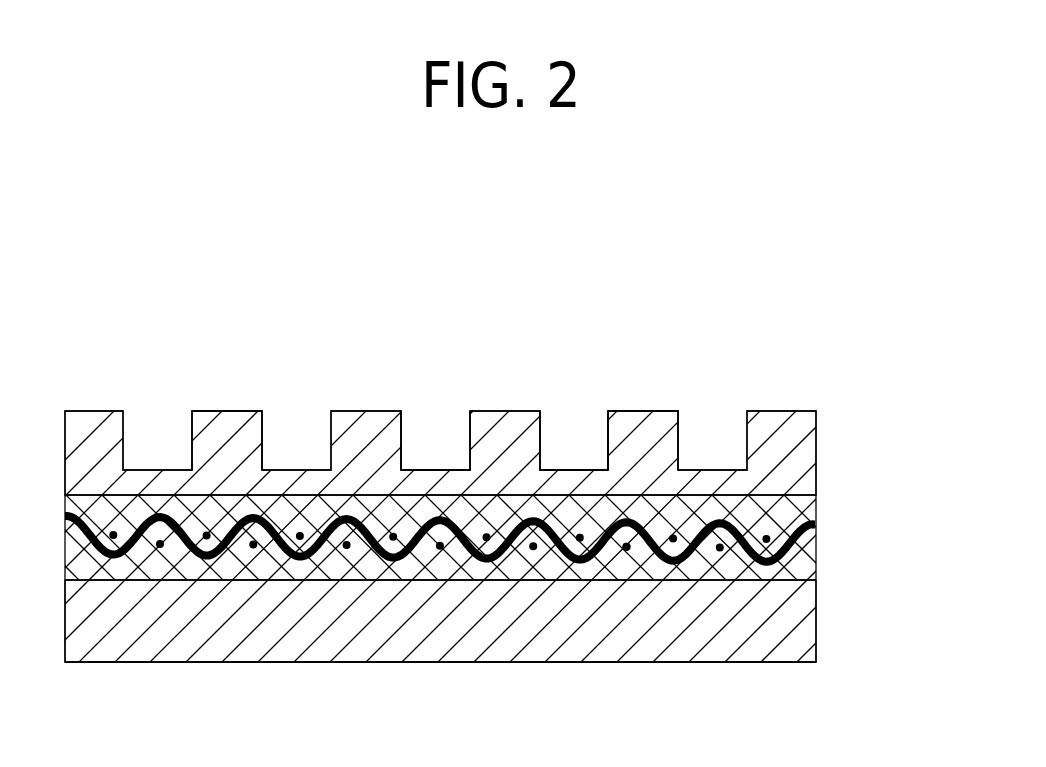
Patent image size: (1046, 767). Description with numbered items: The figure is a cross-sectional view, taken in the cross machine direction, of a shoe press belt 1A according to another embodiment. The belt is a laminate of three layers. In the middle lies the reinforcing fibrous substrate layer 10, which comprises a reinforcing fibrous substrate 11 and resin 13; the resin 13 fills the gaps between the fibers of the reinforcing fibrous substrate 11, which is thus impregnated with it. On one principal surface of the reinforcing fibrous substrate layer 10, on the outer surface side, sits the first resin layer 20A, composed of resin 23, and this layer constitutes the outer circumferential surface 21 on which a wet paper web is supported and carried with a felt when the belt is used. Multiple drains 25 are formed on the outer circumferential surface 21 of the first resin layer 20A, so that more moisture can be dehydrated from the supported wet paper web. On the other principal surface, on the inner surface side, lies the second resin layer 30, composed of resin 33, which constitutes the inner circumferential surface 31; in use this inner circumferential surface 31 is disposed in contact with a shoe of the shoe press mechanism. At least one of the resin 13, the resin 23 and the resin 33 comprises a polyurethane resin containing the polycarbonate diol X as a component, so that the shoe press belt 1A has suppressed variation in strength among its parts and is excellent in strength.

The shoe press belt 1A is at (782, 367).
The first resin layer 20A is at (816, 448).
The outer circumferential surface 21 is at (233, 411).
The resin 23 is at (633, 447).
The drains 25 is at (573, 435).
The reinforcing fibrous substrate layer 10 is at (816, 542).
The reinforcing fibrous substrate 11 is at (572, 556).
The resin 13 is at (637, 541).
The second resin layer 30 is at (816, 630).
The inner circumferential surface 31 is at (218, 665).
The resin 33 is at (354, 618).